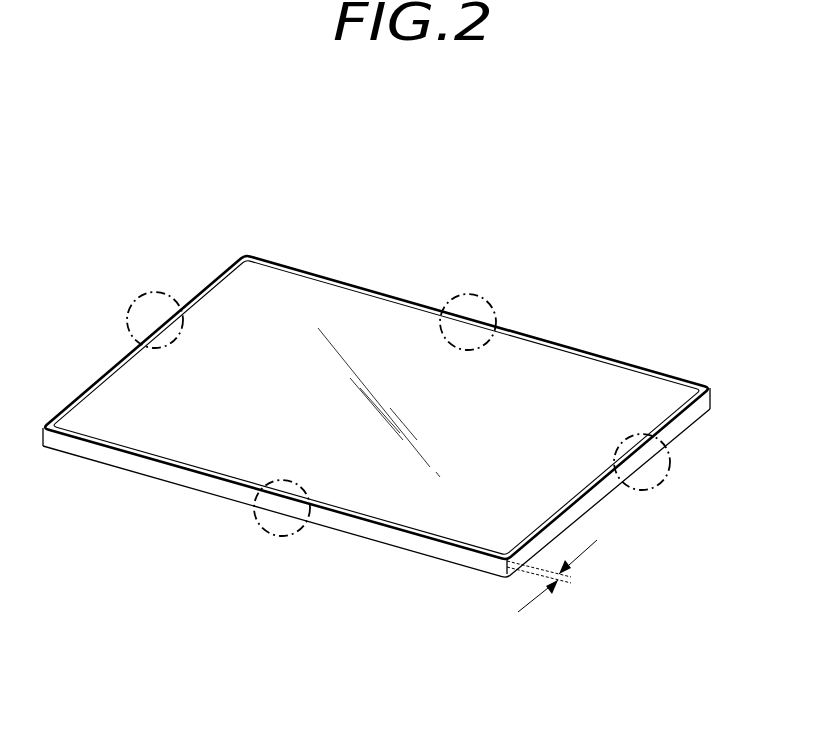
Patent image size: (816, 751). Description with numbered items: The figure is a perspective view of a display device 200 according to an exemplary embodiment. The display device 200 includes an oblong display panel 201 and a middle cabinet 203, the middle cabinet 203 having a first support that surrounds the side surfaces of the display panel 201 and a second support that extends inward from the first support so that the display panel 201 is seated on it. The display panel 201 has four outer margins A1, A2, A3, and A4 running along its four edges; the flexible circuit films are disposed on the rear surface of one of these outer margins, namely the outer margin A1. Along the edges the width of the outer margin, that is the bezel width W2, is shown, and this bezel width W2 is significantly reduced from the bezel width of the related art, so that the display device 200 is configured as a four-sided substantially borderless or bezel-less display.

The display device 200 is at (107, 172).
The display panel 201 is at (110, 400).
The middle cabinet 203 is at (203, 487).
The outer margin A1 is at (268, 535).
The outer margin A2 is at (668, 478).
The outer margin A3 is at (467, 295).
The outer margin A4 is at (137, 298).
The bezel width W2 is at (556, 576).